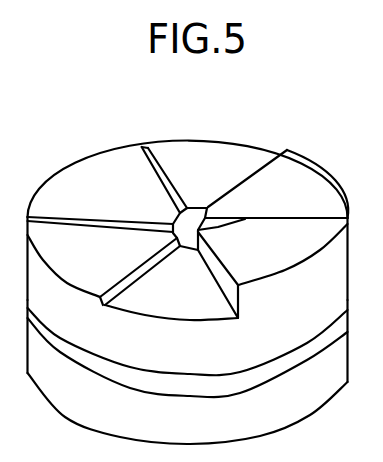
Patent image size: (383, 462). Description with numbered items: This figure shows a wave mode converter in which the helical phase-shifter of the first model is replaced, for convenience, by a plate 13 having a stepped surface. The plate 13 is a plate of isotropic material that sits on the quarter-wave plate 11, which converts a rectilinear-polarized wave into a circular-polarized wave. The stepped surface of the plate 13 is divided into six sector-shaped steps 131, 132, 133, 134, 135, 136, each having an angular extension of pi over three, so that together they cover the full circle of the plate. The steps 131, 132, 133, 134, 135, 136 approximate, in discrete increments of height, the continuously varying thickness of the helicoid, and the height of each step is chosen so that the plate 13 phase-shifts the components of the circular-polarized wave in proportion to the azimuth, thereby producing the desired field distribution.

The quarter-wave plate 11 is at (312, 409).
The plate having a stepped surface 13 is at (342, 278).
The step 131 is at (177, 306).
The step 132 is at (77, 277).
The step 133 is at (70, 175).
The step 134 is at (195, 154).
The step 135 is at (317, 178).
The step 136 is at (278, 266).